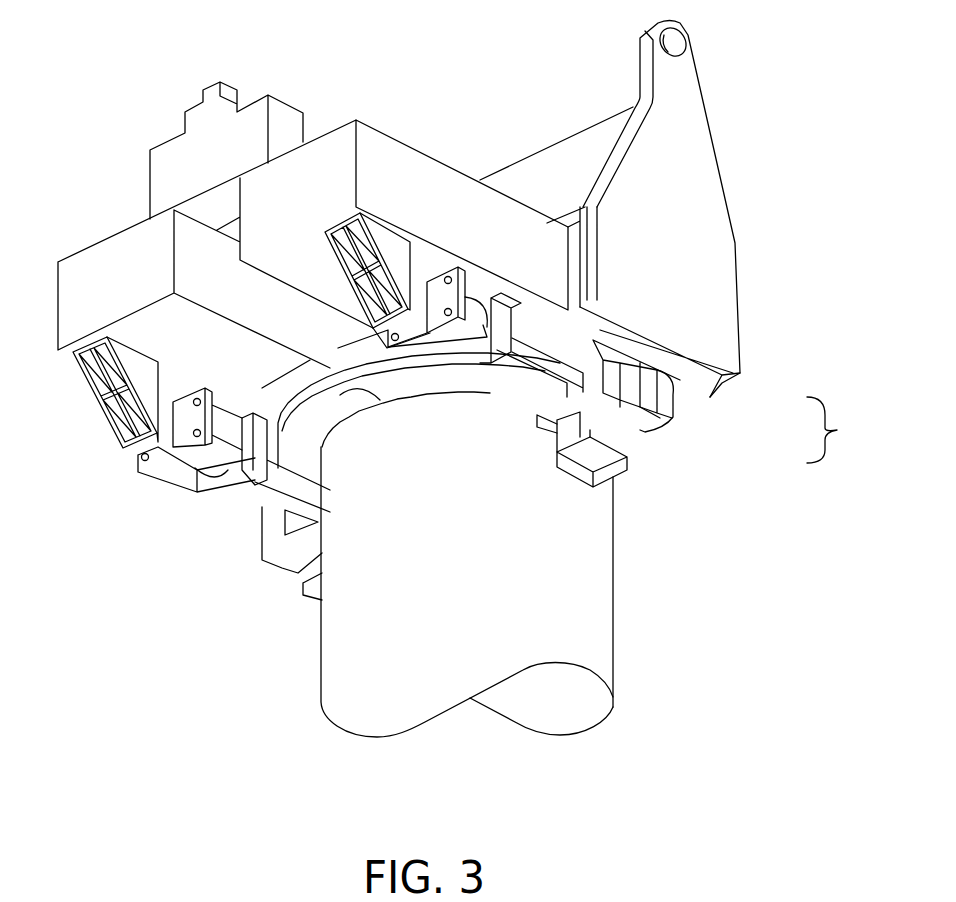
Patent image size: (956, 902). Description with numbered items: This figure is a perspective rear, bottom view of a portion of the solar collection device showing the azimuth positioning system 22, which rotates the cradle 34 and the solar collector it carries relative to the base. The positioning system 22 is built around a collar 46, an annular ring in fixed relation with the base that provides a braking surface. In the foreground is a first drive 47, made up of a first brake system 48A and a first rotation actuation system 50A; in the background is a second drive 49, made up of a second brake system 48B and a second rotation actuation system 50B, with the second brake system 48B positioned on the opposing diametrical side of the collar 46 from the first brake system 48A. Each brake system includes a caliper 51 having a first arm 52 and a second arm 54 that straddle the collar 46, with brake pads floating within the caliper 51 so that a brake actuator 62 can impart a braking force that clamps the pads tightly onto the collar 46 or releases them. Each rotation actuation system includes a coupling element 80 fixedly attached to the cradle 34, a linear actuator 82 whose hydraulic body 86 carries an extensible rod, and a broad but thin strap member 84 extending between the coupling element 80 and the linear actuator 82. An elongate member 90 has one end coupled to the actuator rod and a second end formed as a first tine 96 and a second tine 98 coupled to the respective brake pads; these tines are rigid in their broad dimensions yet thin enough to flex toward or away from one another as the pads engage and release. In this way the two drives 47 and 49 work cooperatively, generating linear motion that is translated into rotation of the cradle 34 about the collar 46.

The positioning system 22 is at (710, 487).
The cradle 34 is at (78, 257).
The collar 46 is at (662, 437).
The first drive 47 is at (844, 430).
The first brake system 48A is at (624, 407).
The second brake system 48B is at (257, 586).
The second drive 49 is at (190, 515).
The first rotation actuation system 50A is at (333, 272).
The second rotation actuation system 50B is at (177, 482).
The caliper 51 is at (660, 433).
The first arm 52 is at (595, 357).
The second arm 54 is at (552, 437).
The brake actuator 62 is at (585, 473).
The coupling element 80 is at (383, 237).
The linear actuator 82 is at (473, 310).
The strap member 84 is at (415, 283).
The body 86 is at (460, 347).
The elongate member 90 is at (517, 310).
The first tine 96 is at (527, 377).
The second tine 98 is at (503, 367).